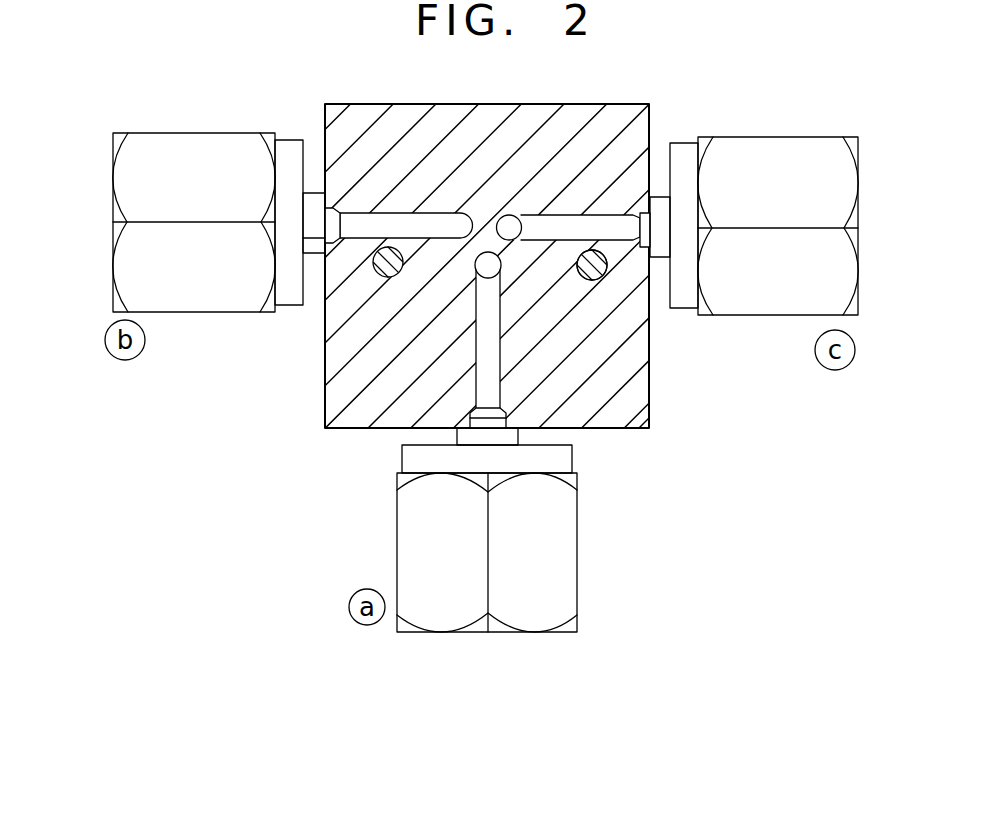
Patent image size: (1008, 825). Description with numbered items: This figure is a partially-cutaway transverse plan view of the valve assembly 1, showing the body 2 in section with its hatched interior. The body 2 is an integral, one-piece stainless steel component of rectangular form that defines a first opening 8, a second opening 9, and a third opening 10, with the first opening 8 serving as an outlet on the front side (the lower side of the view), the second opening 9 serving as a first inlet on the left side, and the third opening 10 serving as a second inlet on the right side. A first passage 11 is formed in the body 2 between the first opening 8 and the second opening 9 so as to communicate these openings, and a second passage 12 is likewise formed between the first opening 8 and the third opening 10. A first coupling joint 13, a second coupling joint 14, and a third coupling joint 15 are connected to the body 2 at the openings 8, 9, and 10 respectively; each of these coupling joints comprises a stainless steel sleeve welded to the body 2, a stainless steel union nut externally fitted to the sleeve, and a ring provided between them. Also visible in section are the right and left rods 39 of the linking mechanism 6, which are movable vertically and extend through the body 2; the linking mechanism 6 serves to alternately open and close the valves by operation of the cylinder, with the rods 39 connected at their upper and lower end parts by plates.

The fitting assembly 1 is at (103, 158).
The body 2 is at (650, 432).
The linking mechanism 6 is at (605, 279).
The first opening 8 is at (471, 413).
The second opening 9 is at (340, 250).
The third opening 10 is at (645, 217).
The first passage 11 is at (379, 234).
The second passage 12 is at (642, 236).
The first coupling joint 13 is at (558, 561).
The second coupling joint 14 is at (135, 272).
The third coupling joint 15 is at (841, 179).
The rods 39 is at (387, 281).